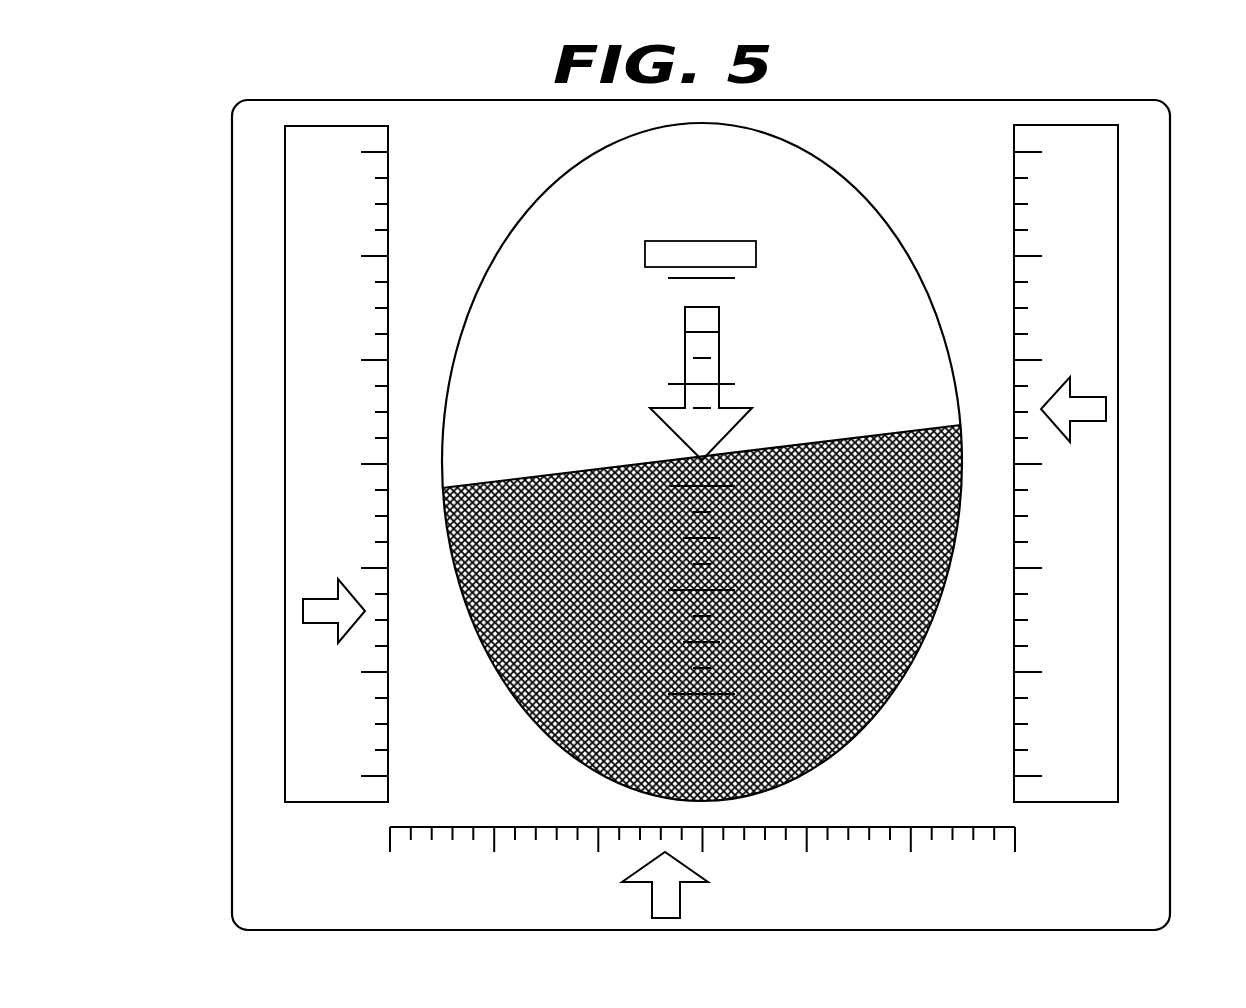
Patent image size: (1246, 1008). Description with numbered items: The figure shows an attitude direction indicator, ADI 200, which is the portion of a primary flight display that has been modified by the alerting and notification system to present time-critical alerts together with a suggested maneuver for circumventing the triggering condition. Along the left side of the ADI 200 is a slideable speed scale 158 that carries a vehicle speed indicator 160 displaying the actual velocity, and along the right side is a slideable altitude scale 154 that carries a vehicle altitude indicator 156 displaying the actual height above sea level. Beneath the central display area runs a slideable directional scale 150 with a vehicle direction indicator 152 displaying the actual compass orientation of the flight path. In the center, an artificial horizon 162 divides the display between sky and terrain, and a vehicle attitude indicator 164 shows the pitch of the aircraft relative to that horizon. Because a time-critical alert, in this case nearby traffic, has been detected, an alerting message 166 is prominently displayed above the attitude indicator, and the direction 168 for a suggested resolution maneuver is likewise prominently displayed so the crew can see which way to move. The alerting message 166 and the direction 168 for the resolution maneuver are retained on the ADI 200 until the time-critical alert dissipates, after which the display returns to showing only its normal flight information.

The attitude direction indicator 200 is at (783, 100).
The slideable speed scale 158 is at (283, 215).
The vehicle speed indicator 160 is at (303, 603).
The slideable altitude scale 154 is at (1118, 287).
The vehicle altitude indicator 156 is at (1098, 397).
The alerting message 166 is at (712, 240).
The direction for suggested resolution maneuver 168 is at (685, 355).
The vehicle attitude indicator 164 is at (752, 365).
The artificial horizon 162 is at (840, 437).
The slideable directional scale 150 is at (864, 865).
The vehicle direction indicator 152 is at (680, 893).